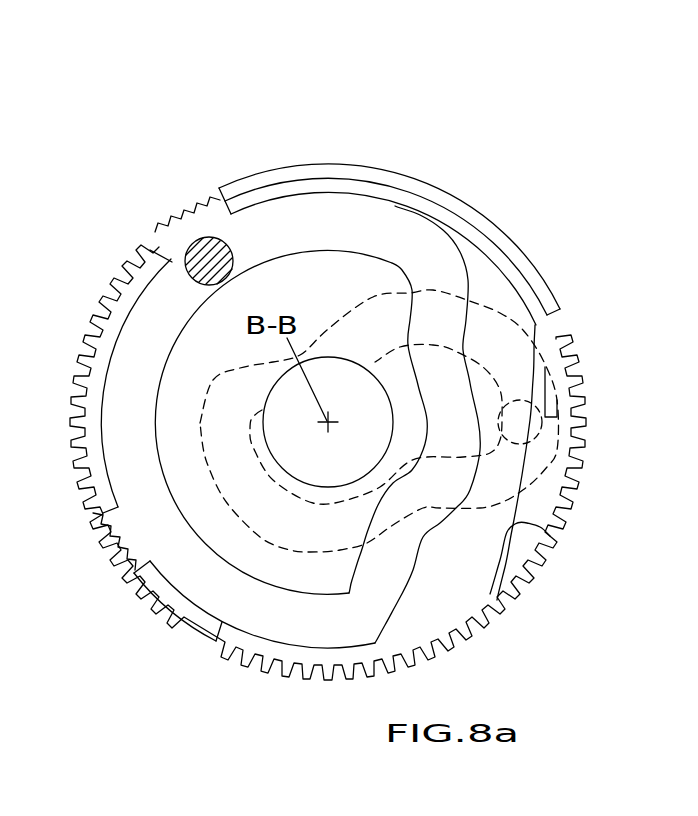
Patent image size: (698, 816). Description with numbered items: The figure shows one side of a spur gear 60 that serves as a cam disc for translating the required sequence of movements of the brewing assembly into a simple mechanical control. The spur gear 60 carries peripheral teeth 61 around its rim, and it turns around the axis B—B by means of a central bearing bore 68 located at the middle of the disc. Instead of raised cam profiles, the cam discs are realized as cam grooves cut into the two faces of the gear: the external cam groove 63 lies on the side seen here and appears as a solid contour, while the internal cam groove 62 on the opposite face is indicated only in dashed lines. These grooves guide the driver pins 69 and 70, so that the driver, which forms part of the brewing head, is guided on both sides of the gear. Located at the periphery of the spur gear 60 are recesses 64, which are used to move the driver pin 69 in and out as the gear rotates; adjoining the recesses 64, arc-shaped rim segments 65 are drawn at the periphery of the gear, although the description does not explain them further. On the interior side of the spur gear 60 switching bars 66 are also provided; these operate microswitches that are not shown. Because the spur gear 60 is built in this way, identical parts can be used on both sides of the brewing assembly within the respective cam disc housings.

The spur gear 60 is at (326, 138).
The teeth 61 is at (102, 298).
The internal cam groove 62 is at (533, 290).
The external cam groove 63 is at (418, 245).
The recesses 64 is at (168, 243).
The arc segment 65 is at (400, 170).
The switching bars 66 is at (574, 549).
The central bearing bore 68 is at (283, 417).
The driver pin 69 is at (207, 250).
The driver pin 70 is at (556, 432).